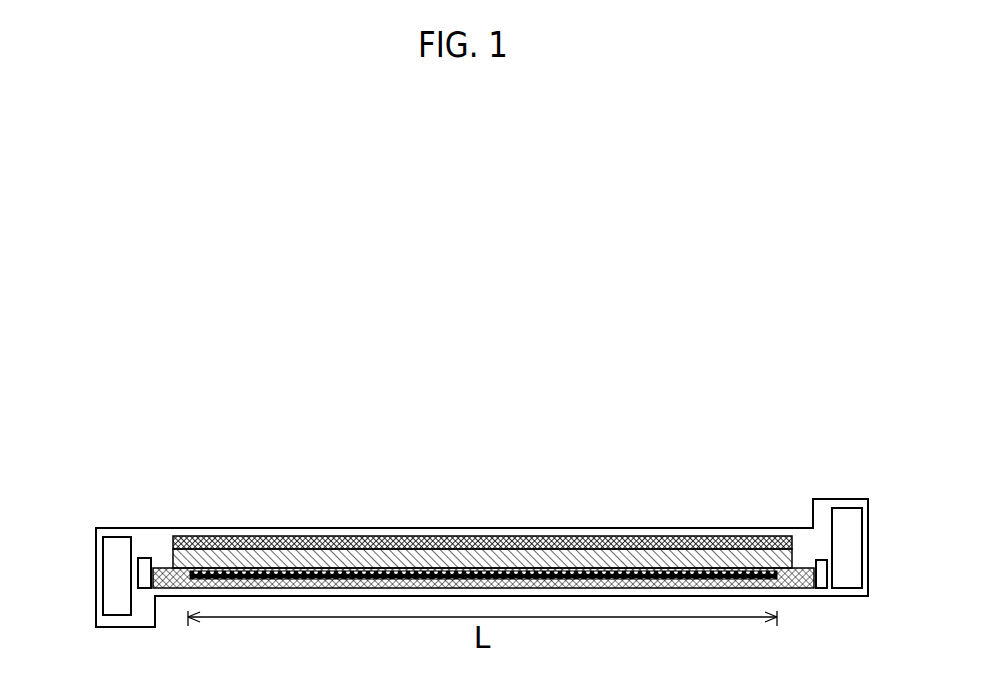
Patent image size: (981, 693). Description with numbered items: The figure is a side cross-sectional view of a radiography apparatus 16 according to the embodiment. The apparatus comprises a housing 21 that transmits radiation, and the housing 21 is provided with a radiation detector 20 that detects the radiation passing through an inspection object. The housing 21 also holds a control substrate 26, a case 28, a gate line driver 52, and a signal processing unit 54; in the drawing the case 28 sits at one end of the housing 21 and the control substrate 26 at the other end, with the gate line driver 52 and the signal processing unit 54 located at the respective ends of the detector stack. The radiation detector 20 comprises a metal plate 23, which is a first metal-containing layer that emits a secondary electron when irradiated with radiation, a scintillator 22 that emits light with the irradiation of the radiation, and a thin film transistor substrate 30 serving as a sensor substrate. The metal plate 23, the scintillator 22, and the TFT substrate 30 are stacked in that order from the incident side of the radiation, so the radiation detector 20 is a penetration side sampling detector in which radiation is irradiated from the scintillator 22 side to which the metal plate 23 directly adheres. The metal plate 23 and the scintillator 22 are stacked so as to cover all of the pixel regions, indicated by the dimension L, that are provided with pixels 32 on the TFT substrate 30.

The radiography apparatus 16 is at (849, 473).
The radiation detector 20 is at (483, 503).
The housing 21 is at (857, 596).
The scintillator 22 is at (705, 549).
The metal plate 23 is at (648, 536).
The control substrate 26 is at (862, 568).
The case 28 is at (103, 575).
The thin film transistor (TFT) substrate 30 is at (643, 473).
The pixels 32 is at (190, 580).
The gate line driver 52 is at (145, 558).
The signal processing unit 54 is at (820, 588).